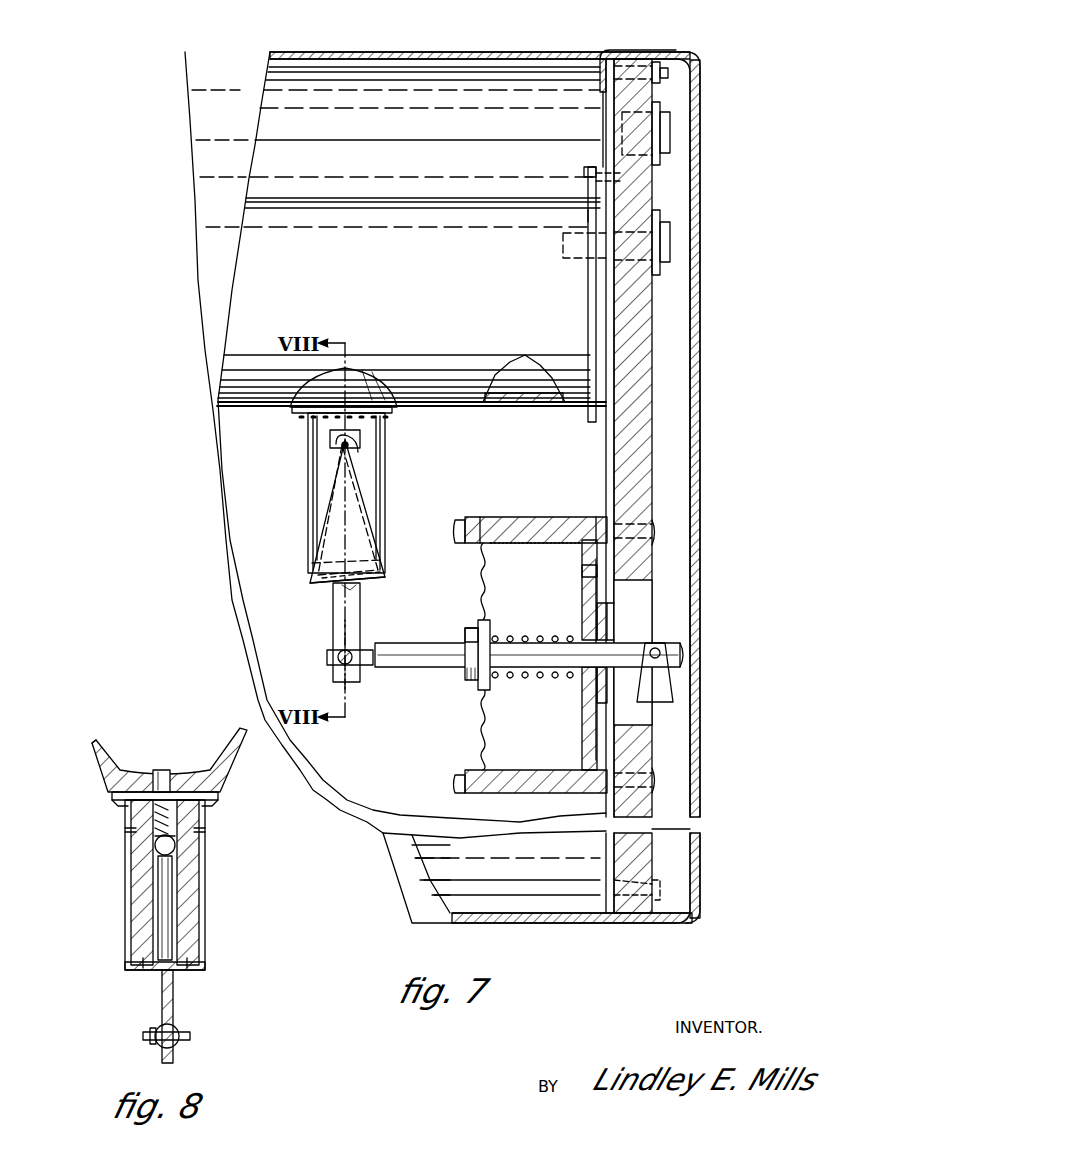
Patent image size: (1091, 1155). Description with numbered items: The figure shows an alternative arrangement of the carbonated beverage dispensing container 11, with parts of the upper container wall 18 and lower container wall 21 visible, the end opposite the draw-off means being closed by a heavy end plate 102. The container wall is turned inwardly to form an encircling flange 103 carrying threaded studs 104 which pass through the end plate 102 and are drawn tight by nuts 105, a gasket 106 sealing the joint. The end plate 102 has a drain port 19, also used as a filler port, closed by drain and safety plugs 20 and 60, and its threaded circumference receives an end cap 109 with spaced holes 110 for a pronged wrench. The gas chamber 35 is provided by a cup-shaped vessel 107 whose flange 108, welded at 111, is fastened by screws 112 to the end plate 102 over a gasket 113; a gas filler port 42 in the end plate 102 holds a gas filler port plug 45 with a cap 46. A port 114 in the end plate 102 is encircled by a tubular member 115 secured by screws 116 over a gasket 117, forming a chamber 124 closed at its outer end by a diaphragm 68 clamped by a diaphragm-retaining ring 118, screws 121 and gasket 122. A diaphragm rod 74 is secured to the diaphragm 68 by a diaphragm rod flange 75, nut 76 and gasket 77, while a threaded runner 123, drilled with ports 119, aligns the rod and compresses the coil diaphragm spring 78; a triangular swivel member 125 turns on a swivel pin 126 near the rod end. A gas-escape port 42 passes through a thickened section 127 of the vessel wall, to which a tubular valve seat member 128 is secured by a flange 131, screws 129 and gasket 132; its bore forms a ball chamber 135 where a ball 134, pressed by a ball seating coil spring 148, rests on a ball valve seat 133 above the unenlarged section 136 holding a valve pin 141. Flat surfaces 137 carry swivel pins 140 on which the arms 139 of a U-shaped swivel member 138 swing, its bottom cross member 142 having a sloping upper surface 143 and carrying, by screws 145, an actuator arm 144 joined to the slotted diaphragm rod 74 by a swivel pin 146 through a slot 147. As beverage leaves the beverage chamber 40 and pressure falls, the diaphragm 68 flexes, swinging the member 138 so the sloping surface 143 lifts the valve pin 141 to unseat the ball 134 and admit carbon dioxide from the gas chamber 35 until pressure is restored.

In FIG. 7, the container 11 is at (197, 216).
In FIG. 7, the upper container wall 18 is at (416, 52).
In FIG. 7, the drain port 19 is at (622, 122).
In FIG. 7, the drain plug 20 is at (662, 108).
In FIG. 7, the lower container wall 21 is at (565, 922).
In FIG. 7, the gas chamber 35 is at (518, 384).
In FIG. 8, the gas chamber 35 is at (105, 748).
In FIG. 7, the beverage chamber 40 is at (492, 60).
In FIG. 7, the gas filler port 42 is at (612, 268).
In FIG. 8, the gas filler port 42 is at (165, 770).
In FIG. 7, the gas filler port plug 45 is at (660, 222).
In FIG. 7, the cap 46 is at (672, 246).
In FIG. 7, the safety plug 60 is at (672, 136).
In FIG. 7, the diaphragm 68 is at (490, 582).
In FIG. 7, the diaphragm rod 74 is at (545, 645).
In FIG. 7, the diaphragm rod flange 75 is at (490, 630).
In FIG. 7, the nut 76 is at (465, 676).
In FIG. 7, the gasket 77 is at (478, 683).
In FIG. 7, the coil diaphragm spring 78 is at (550, 675).
In FIG. 7, the end plate 102 is at (645, 318).
In FIG. 7, the encircling flange 103 is at (600, 82).
In FIG. 7, the threaded studs 104 is at (668, 73).
In FIG. 7, the nuts 105 is at (657, 64).
In FIG. 7, the gasket 106 is at (606, 50).
In FIG. 7, the vessel 107 is at (462, 205).
In FIG. 7, the flange 108 is at (588, 167).
In FIG. 7, the end cap 109 is at (697, 53).
In FIG. 7, the holes 110 is at (700, 112).
In FIG. 7, the weld 111 is at (585, 209).
In FIG. 7, the screws 112 is at (586, 182).
In FIG. 7, the gasket 113 is at (590, 300).
In FIG. 7, the port 114 is at (640, 590).
In FIG. 7, the tubular member 115 is at (535, 517).
In FIG. 7, the screws 116 is at (660, 528).
In FIG. 7, the gasket 117 is at (600, 515).
In FIG. 7, the diaphragm-retaining ring 118 is at (462, 520).
In FIG. 7, the ports 119 is at (598, 571).
In FIG. 7, the screws 121 is at (465, 537).
In FIG. 7, the gasket 122 is at (482, 517).
In FIG. 7, the threaded runner 123 is at (612, 612).
In FIG. 7, the chamber 124 is at (512, 745).
In FIG. 7, the swivel member 125 is at (662, 690).
In FIG. 7, the swivel pin 126 is at (665, 650).
In FIG. 7, the thickened section 127 is at (385, 380).
In FIG. 8, the thickened section 127 is at (218, 762).
In FIG. 7, the tubular valve seat member 128 is at (385, 472).
In FIG. 8, the tubular valve seat member 128 is at (190, 862).
In FIG. 7, the screws 129 is at (292, 414).
In FIG. 8, the screws 129 is at (210, 808).
In FIG. 7, the flange 131 is at (302, 424).
In FIG. 8, the flange 131 is at (112, 802).
In FIG. 8, the gasket 132 is at (218, 796).
In FIG. 8, the ball valve seat 133 is at (145, 862).
In FIG. 8, the ball 134 is at (152, 850).
In FIG. 8, the ball chamber 135 is at (150, 818).
In FIG. 8, the unenlarged section of the bore 136 is at (160, 912).
In FIG. 7, the flat surfaces 137 is at (362, 438).
In FIG. 8, the flat surfaces 137 is at (208, 845).
In FIG. 8, the U-shaped swivel member 138 is at (210, 945).
In FIG. 7, the arms 139 is at (326, 535).
In FIG. 8, the arms 139 is at (200, 895).
In FIG. 7, the swivel pins 140 is at (340, 448).
In FIG. 8, the swivel pins 140 is at (130, 835).
In FIG. 7, the valve pin 141 is at (312, 568).
In FIG. 8, the valve pin 141 is at (160, 882).
In FIG. 7, the bottom cross member 142 is at (382, 582).
In FIG. 8, the bottom cross member 142 is at (200, 968).
In FIG. 7, the sloping upper surface 143 is at (312, 585).
In FIG. 8, the sloping upper surface 143 is at (200, 922).
In FIG. 7, the actuator arm 144 is at (340, 603).
In FIG. 8, the actuator arm 144 is at (174, 1000).
In FIG. 7, the screws 145 is at (362, 592).
In FIG. 8, the screws 145 is at (143, 972).
In FIG. 7, the swivel pin 146 is at (326, 660).
In FIG. 8, the swivel pin 146 is at (145, 1040).
In FIG. 7, the slot 147 is at (340, 648).
In FIG. 8, the slot 147 is at (176, 1030).
In FIG. 8, the ball seating coil spring 148 is at (155, 772).